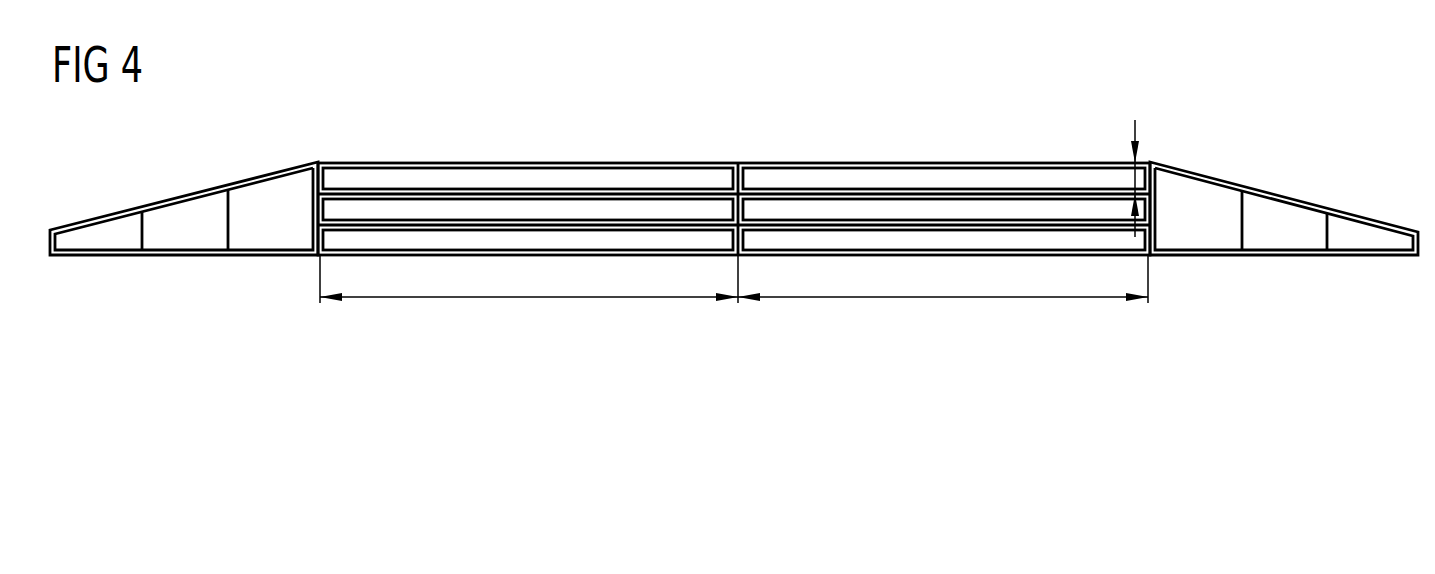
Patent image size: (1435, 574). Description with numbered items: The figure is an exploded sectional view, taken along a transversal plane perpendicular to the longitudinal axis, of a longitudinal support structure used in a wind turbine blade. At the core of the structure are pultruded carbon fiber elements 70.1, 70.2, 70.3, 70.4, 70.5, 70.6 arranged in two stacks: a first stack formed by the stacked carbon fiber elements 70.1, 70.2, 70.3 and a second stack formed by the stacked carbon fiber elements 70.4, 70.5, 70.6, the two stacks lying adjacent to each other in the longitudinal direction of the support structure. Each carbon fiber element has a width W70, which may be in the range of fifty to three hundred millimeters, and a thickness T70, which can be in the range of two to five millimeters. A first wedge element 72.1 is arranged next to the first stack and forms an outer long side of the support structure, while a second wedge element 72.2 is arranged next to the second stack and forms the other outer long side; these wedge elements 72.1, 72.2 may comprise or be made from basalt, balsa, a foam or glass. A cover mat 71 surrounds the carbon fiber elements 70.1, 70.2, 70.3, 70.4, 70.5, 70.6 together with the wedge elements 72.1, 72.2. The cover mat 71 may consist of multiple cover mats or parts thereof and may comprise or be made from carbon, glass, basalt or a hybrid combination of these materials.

The pultruded carbon fiber element 70.1 is at (412, 240).
The pultruded carbon fiber element 70.2 is at (508, 210).
The pultruded carbon fiber element 70.3 is at (622, 183).
The pultruded carbon fiber element 70.4 is at (1032, 183).
The pultruded carbon fiber element 70.5 is at (918, 210).
The pultruded carbon fiber element 70.6 is at (822, 240).
The cover mat 71 is at (718, 162).
The first wedge element 72.1 is at (183, 218).
The second wedge element 72.2 is at (1290, 218).
The width of the carbon fiber elements W70 is at (948, 298).
The thickness of the carbon fiber elements T70 is at (1135, 178).